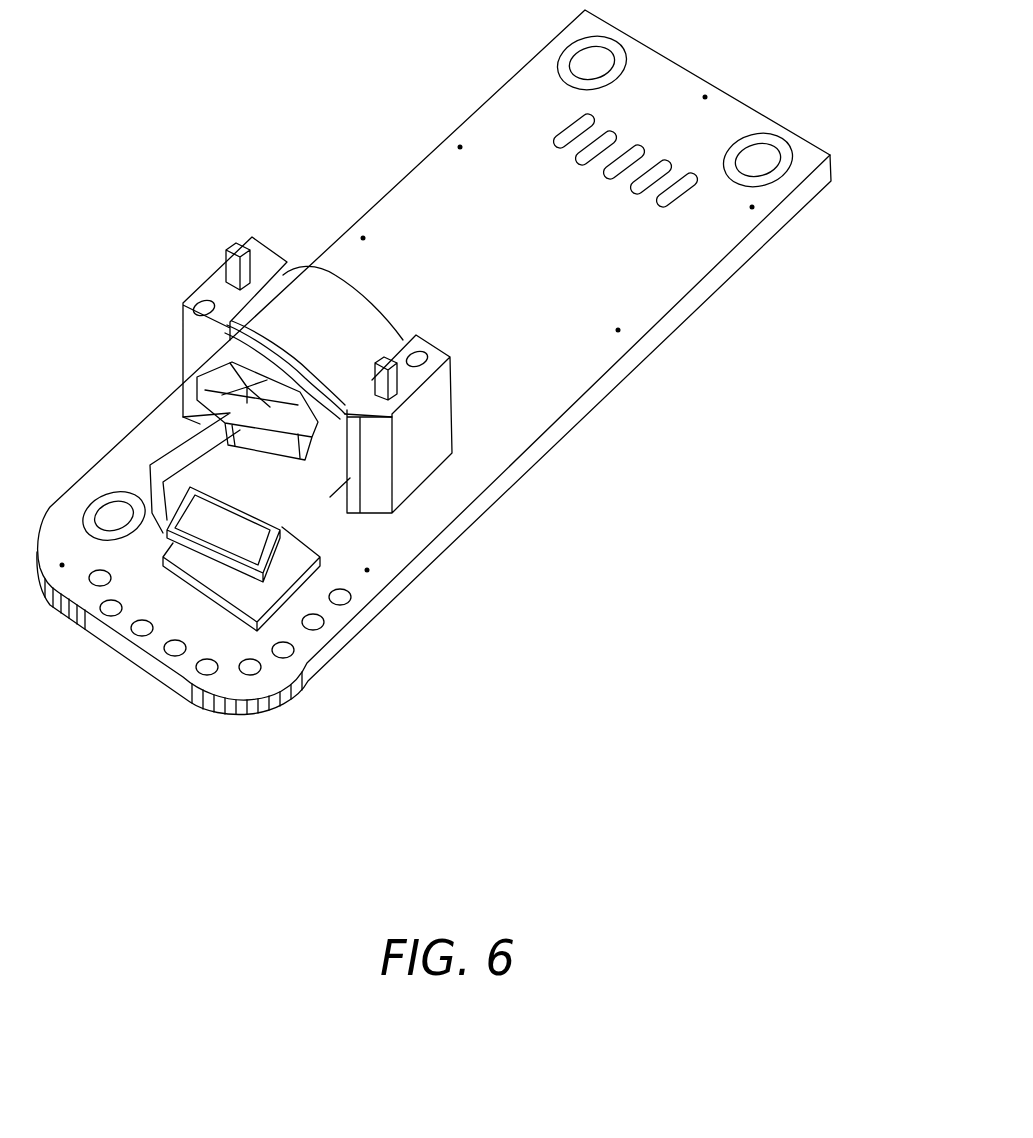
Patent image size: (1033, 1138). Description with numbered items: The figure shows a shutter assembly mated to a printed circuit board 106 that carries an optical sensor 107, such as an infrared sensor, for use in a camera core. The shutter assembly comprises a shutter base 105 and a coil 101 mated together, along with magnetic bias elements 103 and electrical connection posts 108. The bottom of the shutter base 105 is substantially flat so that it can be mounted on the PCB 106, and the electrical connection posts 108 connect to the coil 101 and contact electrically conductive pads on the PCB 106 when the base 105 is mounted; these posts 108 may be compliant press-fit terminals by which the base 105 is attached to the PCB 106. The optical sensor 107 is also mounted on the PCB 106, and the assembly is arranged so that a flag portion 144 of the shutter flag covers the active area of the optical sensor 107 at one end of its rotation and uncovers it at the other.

The coil 101 is at (345, 298).
The magnetic bias elements 103 is at (200, 299).
The shutter base 105 is at (431, 464).
The printed circuit board 106 is at (465, 218).
The optical sensor 107 is at (285, 555).
The electrical connection posts 108 is at (235, 245).
The flag portion 144 is at (241, 540).